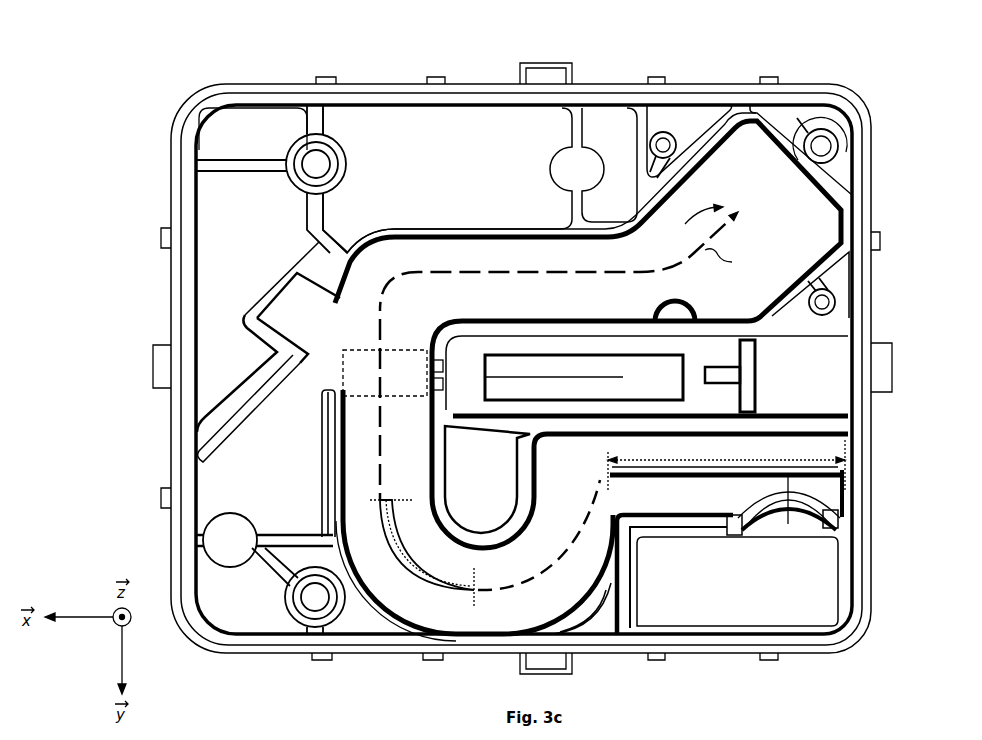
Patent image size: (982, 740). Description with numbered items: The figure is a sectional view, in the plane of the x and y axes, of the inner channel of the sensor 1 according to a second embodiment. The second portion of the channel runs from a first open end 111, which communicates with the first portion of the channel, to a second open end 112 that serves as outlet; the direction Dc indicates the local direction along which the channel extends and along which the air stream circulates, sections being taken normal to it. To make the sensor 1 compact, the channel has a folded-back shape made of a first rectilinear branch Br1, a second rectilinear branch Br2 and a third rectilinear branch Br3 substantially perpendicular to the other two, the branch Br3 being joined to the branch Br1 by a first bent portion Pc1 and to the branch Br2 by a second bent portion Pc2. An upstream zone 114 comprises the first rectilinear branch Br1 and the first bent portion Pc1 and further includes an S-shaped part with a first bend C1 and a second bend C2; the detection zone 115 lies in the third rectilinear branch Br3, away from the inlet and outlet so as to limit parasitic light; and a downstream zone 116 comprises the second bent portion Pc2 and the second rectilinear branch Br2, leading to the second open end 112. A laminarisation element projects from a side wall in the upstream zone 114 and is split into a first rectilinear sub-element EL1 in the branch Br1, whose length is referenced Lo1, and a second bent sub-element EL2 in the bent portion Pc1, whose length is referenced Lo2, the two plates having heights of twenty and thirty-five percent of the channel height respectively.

The sensor 1 is at (656, 55).
The second bent portion Pc2 is at (362, 246).
The second rectilinear branch Br2 is at (513, 232).
The downstream zone 116 is at (559, 356).
The second open end 112 is at (686, 224).
The direction Dc is at (728, 260).
The third rectilinear branch Br3 is at (343, 364).
The detection zone 115 is at (366, 391).
The first bend C1 is at (527, 438).
The length of the first sub-element Lo1 is at (726, 451).
The first open end 111 is at (818, 450).
The first rectilinear sub-element EL1 is at (647, 480).
The first rectilinear branch Br1 is at (690, 518).
The length of the second sub-element Lo2 is at (420, 565).
The upstream zone 114 is at (539, 547).
The first bent portion Pc1 is at (372, 590).
The second bent sub-element EL2 is at (417, 573).
The second bend C2 is at (583, 605).